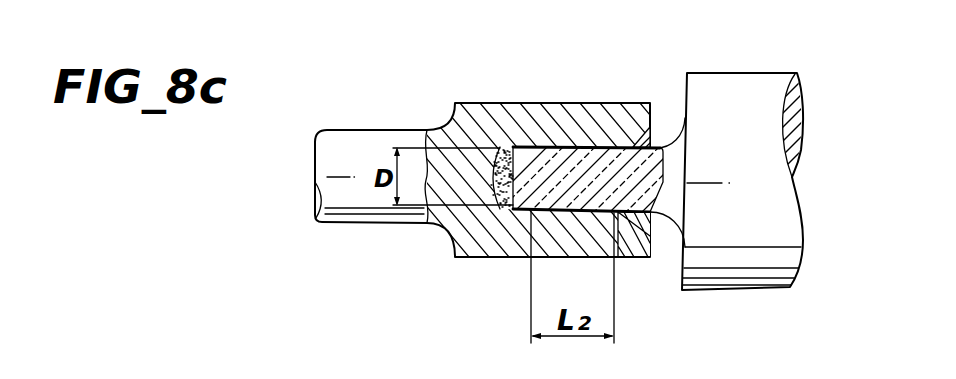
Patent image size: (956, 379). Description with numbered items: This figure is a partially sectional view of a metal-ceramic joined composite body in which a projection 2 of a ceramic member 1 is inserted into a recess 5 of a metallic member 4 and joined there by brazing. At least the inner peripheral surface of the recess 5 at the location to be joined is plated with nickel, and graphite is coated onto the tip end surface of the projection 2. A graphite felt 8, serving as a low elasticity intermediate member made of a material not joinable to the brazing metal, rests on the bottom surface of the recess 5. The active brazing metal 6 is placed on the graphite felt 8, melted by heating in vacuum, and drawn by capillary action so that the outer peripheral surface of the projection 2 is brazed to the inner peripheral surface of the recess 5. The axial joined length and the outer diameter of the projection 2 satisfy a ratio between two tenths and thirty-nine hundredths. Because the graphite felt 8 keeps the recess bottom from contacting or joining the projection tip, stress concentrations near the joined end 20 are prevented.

The ceramic member 1 is at (741, 84).
The projection 2 is at (576, 185).
The metallic member 4 is at (368, 216).
The recess 5 is at (504, 250).
The active brazing metal 6 is at (570, 147).
The graphite felt 8 is at (497, 158).
The joined end 20 is at (653, 147).